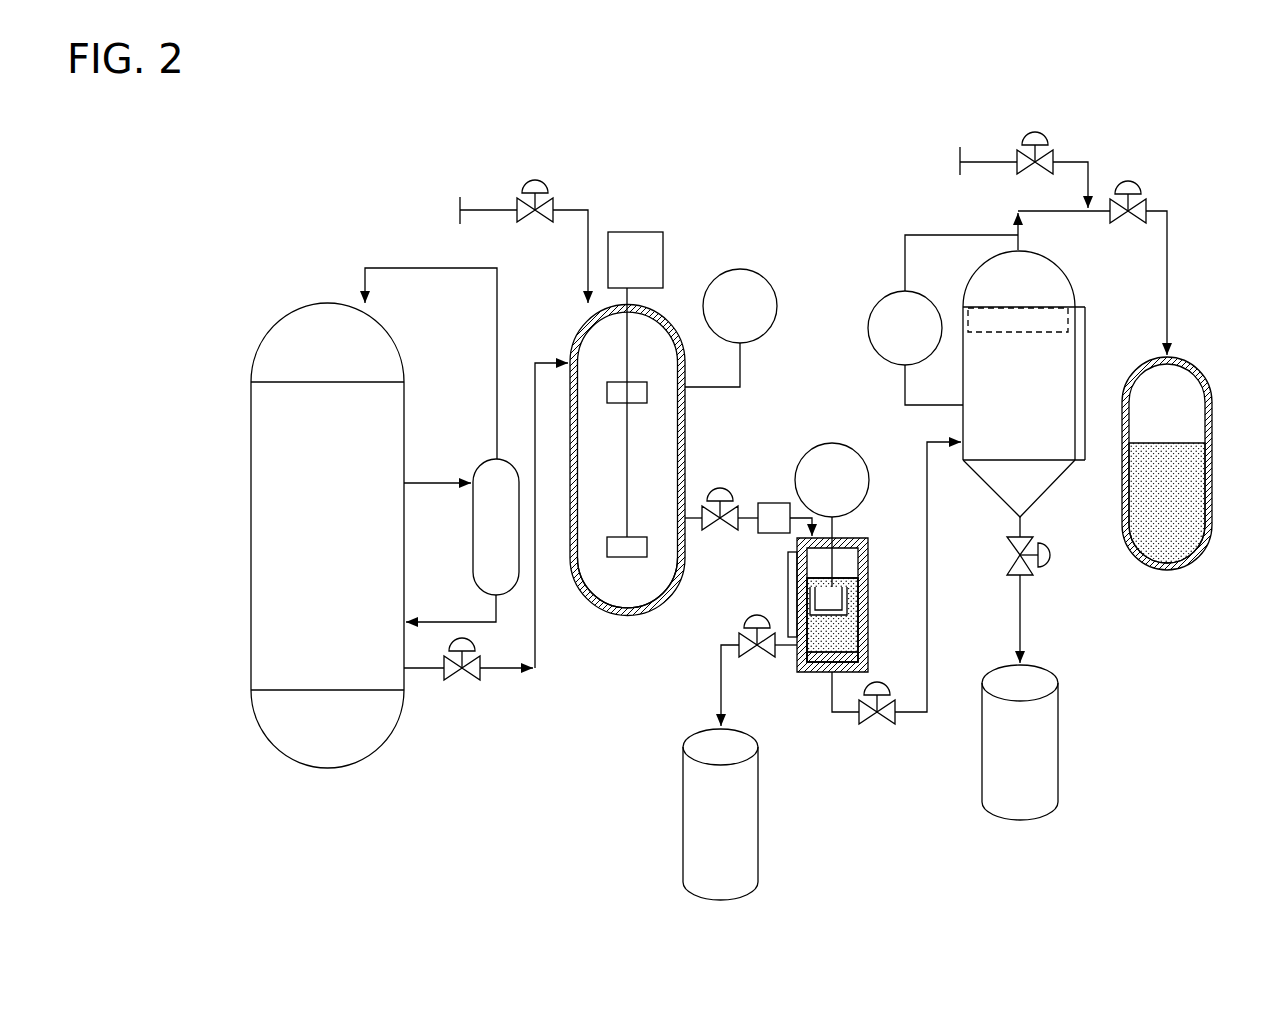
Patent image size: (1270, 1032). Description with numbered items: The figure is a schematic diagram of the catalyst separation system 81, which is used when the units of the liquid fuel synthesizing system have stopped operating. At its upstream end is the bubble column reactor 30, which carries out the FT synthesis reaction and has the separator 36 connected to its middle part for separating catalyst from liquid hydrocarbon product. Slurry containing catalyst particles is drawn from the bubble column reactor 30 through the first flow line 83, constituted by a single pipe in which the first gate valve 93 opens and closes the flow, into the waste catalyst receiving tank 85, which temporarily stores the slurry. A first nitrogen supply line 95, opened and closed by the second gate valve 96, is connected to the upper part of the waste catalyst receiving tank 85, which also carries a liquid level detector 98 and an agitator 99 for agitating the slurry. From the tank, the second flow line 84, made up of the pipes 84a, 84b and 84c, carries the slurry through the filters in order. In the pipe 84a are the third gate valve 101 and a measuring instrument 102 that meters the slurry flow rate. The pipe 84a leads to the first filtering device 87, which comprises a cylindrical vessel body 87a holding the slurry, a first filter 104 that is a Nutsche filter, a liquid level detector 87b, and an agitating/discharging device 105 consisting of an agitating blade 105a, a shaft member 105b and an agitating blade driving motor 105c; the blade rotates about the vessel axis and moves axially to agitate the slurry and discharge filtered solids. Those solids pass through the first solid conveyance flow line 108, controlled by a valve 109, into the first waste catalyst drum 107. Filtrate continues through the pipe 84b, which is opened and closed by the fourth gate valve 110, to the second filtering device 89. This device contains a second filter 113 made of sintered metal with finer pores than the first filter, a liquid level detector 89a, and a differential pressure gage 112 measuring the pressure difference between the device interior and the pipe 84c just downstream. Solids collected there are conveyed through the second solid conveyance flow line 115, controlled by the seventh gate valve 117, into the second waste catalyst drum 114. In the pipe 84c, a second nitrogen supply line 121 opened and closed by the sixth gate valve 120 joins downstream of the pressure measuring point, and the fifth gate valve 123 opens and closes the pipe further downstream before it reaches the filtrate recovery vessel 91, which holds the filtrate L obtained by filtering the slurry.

The catalyst separation system 81 is at (352, 182).
The bubble column reactor 30 is at (372, 725).
The separator 36 is at (483, 523).
The first gate valve 93 is at (468, 680).
The first flow line 83 is at (534, 428).
The waste catalyst receiving tank 85 is at (600, 618).
The first nitrogen supply line 95 is at (572, 210).
The second gate valve 96 is at (530, 222).
The liquid level detector 98 is at (737, 278).
The agitator 99 is at (636, 298).
The second flow line 84 is at (805, 400).
The pipe 84a is at (745, 516).
The pipe 84b is at (928, 622).
The pipe 84c is at (1167, 270).
The third gate valve 101 is at (700, 506).
The measuring instrument 102 is at (773, 503).
The agitating/discharging device 105 is at (843, 530).
The agitating blade 105a is at (813, 607).
The shaft member 105b is at (807, 583).
The agitating blade driving motor 105c is at (850, 462).
The first filtering device 87 is at (878, 580).
The cylindrical vessel body 87a is at (866, 602).
The liquid level detector 87b is at (790, 565).
The first filter 104 is at (855, 645).
The first solid conveyance flow line 108 is at (721, 678).
The valve 109 is at (760, 660).
The fourth gate valve 110 is at (880, 725).
The first waste catalyst drum 107 is at (752, 843).
The differential pressure gage 112 is at (893, 297).
The second filter 113 is at (1000, 320).
The second filtering device 89 is at (1076, 275).
The liquid level detector 89a is at (1085, 318).
The seventh gate valve 117 is at (1007, 552).
The second solid conveyance flow line 115 is at (1021, 608).
The second waste catalyst drum 114 is at (1050, 748).
The sixth gate valve 120 is at (1048, 156).
The second nitrogen supply line 121 is at (1076, 160).
The fifth gate valve 123 is at (1146, 200).
The filtrate recovery vessel 91 is at (1211, 522).
The filtrate L is at (1185, 484).